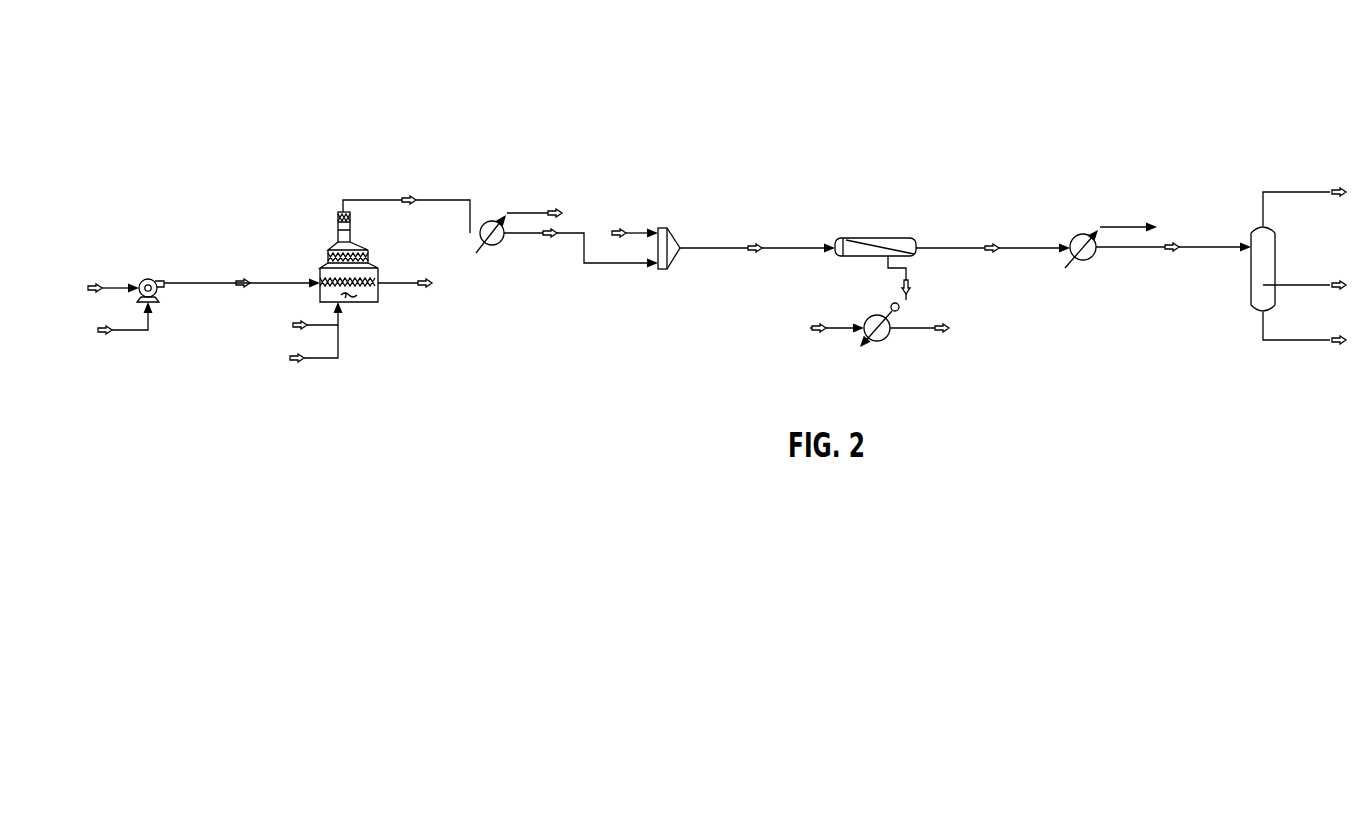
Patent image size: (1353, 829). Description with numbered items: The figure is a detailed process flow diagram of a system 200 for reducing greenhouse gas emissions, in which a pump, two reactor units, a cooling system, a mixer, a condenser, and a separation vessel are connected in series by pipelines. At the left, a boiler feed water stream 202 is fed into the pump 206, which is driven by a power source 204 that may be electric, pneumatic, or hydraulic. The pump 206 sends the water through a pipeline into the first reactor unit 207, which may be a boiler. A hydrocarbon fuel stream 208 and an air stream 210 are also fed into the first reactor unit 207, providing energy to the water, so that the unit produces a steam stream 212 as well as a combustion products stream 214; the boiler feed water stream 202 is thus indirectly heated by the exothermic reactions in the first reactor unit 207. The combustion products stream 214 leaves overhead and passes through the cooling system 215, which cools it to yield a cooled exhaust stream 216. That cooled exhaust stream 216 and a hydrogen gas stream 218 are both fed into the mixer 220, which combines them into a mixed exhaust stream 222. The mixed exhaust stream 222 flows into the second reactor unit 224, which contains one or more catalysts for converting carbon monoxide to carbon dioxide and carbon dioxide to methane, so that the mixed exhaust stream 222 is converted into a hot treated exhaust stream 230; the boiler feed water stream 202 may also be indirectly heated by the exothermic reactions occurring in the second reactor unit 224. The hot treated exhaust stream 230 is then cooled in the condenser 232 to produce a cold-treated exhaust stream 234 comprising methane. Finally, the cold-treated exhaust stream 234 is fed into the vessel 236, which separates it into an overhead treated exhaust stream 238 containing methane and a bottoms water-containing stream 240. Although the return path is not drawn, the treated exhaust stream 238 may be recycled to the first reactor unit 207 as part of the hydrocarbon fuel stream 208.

The system 200 is at (236, 57).
The boiler feed water stream 202 is at (93, 282).
The power source 204 is at (100, 334).
The pump 206 is at (152, 278).
The first reactor unit 207 is at (380, 272).
The hydrocarbon fuel stream 208 is at (296, 322).
The air stream 210 is at (292, 362).
The steam stream 212 is at (421, 288).
The combustion products stream 214 is at (409, 198).
The cooling system 215 is at (490, 222).
The cooled exhaust stream 216 is at (550, 238).
The hydrogen gas stream 218 is at (610, 230).
The mixer 220 is at (668, 233).
The mixed exhaust stream 222 is at (753, 253).
The second reactor unit 224 is at (848, 237).
The hot treated exhaust stream 230 is at (991, 253).
The condenser 232 is at (1078, 236).
The cold-treated exhaust stream 234 is at (1170, 253).
The vessel 236 is at (1265, 257).
The treated exhaust stream 238 is at (1278, 191).
The bottoms water-containing stream 240 is at (1296, 343).